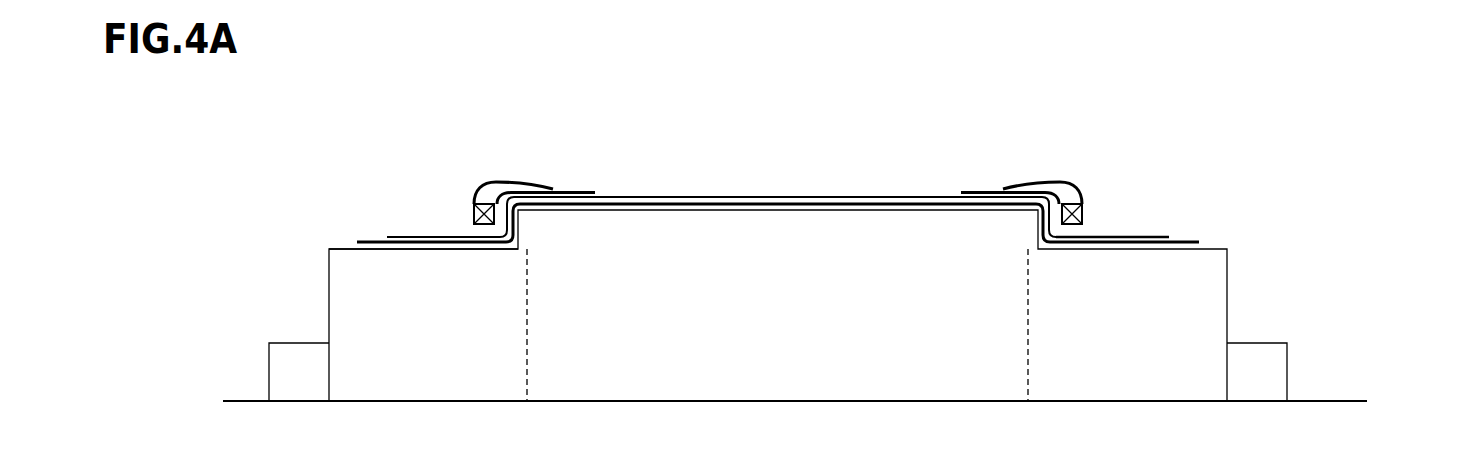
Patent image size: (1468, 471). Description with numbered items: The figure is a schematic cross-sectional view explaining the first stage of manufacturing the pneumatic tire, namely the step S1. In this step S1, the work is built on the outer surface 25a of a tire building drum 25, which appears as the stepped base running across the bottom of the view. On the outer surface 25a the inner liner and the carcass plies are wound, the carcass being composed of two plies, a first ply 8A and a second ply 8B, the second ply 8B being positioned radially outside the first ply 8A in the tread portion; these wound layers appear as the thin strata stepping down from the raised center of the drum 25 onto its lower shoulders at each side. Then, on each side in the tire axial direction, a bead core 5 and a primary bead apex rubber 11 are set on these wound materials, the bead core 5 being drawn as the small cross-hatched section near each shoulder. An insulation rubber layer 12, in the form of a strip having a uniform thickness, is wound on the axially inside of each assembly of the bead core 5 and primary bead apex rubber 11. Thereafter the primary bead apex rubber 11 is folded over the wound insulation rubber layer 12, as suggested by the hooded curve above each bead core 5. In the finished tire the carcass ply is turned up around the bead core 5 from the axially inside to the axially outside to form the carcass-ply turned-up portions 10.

The bead core 5 is at (474, 212).
The first ply 8A is at (1157, 239).
The second ply 8B is at (1113, 236).
The carcass-ply turned-up portions 10 is at (406, 218).
The primary bead apex rubber 11 is at (492, 190).
The insulation rubber layer 12 is at (982, 192).
The tire building drum 25 is at (239, 313).
The outer surface 25a is at (345, 248).
The step S1 is at (1448, 439).